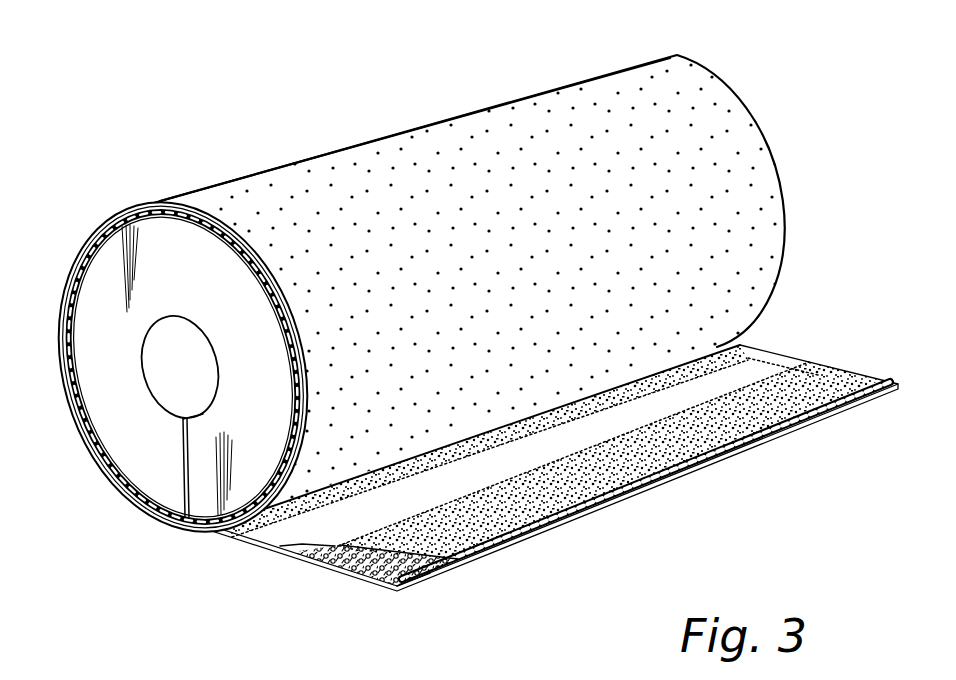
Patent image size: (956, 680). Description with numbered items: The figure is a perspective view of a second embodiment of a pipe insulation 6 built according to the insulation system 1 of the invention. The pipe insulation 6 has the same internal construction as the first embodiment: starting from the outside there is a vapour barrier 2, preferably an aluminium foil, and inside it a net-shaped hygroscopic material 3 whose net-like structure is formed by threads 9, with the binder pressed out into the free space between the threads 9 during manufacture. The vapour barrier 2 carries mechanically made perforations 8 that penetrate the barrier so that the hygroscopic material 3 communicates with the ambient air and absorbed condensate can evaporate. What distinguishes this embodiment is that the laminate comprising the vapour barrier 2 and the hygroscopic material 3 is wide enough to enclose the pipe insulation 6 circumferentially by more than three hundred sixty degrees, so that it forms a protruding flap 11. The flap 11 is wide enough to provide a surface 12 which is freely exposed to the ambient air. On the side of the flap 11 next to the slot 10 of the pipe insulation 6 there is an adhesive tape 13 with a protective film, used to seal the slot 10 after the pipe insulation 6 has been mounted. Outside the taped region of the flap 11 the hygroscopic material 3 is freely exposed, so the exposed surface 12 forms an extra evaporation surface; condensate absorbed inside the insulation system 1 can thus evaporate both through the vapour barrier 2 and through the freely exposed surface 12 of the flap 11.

The insulation system 1 is at (500, 97).
The vapour barrier 2 is at (92, 442).
The hygroscopic material 3 is at (75, 408).
The pipe insulation 6 is at (400, 130).
The perforations 8 is at (250, 183).
The threads 9 is at (413, 583).
The slot 10 is at (178, 480).
The flap 11 is at (350, 582).
The surface 12 is at (585, 507).
The adhesive tape 13 is at (283, 547).